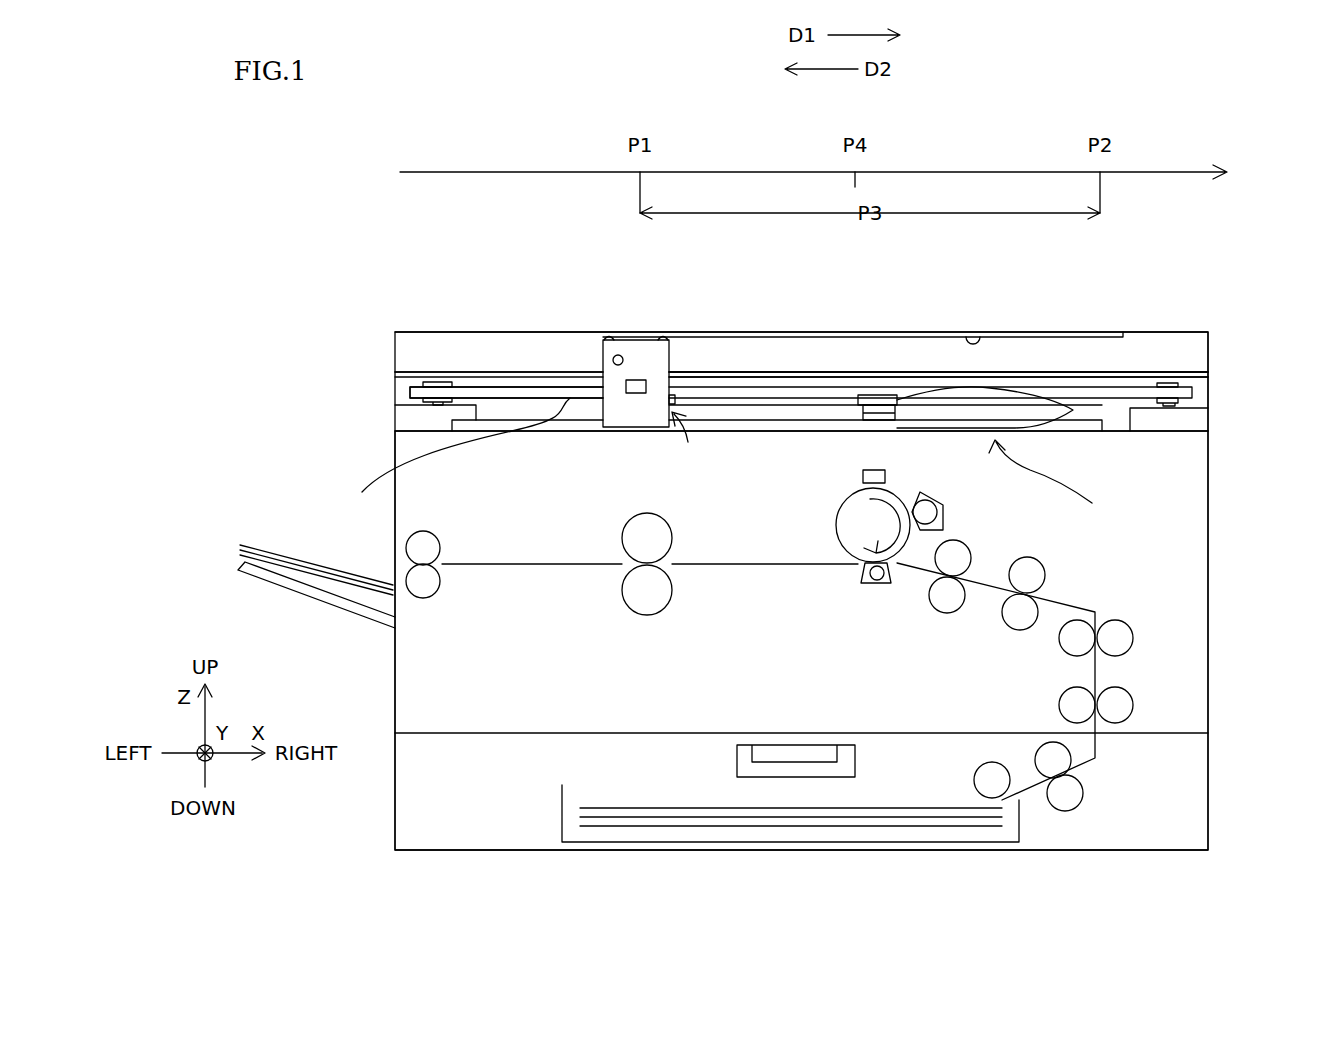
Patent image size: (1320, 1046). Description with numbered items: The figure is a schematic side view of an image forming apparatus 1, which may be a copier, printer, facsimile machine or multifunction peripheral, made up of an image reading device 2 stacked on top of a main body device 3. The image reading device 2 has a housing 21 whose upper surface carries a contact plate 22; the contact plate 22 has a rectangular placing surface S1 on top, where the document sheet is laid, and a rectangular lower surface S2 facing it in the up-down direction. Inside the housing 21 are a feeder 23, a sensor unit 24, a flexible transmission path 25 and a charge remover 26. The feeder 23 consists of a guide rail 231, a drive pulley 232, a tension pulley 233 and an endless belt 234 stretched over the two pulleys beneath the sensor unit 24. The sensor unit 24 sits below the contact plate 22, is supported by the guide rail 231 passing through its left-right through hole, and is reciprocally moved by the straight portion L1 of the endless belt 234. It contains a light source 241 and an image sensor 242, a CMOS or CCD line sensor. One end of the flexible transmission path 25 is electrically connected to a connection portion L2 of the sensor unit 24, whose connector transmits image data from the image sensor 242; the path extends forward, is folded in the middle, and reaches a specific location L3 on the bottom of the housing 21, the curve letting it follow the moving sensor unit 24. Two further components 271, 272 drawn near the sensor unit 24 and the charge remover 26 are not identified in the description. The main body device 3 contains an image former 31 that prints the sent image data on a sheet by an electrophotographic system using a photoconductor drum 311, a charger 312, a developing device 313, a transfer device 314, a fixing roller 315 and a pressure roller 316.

The image forming apparatus 1 is at (333, 298).
The image reading device 2 is at (380, 325).
The main body device 3 is at (1223, 435).
The housing 21 is at (1215, 343).
The contact plate 22 is at (998, 309).
The feeder 23 is at (150, 230).
The guide rail 231 is at (1088, 377).
The drive pulley 232 is at (1167, 382).
The tension pulley 233 is at (440, 382).
The endless belt 234 is at (534, 368).
The sensor unit 24 is at (597, 337).
The light source 241 is at (616, 366).
The image sensor 242 is at (637, 394).
The flexible transmission path 25 is at (720, 372).
The charge remover 26 is at (876, 395).
The first sensor 271 is at (675, 393).
The second sensor 272 is at (862, 395).
The image former 31 is at (395, 643).
The photoconductor drum 311 is at (837, 516).
The charger 312 is at (863, 471).
The developing device 313 is at (930, 493).
The transfer device 314 is at (880, 583).
The fixing roller 315 is at (622, 537).
The pressure roller 316 is at (627, 612).
The placing surface S1 is at (905, 333).
The lower surface S2 is at (965, 337).
The straight portion L1 is at (458, 461).
The connection portion L2 is at (685, 451).
The specific location L3 is at (1048, 486).